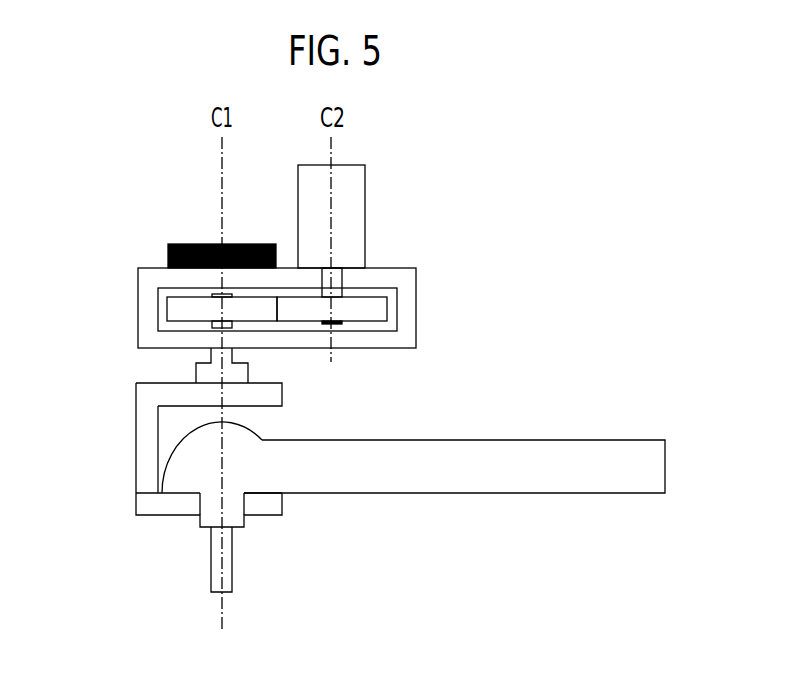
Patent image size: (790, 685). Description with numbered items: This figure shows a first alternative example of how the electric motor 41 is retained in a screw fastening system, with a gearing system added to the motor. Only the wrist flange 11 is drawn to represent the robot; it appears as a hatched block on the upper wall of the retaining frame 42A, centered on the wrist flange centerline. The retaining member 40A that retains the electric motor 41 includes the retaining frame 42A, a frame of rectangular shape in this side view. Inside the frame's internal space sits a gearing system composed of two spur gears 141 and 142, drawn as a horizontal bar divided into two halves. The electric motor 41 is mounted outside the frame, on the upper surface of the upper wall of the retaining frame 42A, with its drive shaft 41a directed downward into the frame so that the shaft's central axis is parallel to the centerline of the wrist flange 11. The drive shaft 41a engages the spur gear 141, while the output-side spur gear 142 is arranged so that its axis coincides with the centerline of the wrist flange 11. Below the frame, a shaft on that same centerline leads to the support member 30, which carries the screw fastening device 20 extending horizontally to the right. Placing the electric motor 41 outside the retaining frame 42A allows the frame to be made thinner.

The wrist flange 11 is at (168, 262).
The screw fastening device 20 is at (615, 430).
The support member 30 is at (126, 432).
The retaining member 40A is at (446, 229).
The electric motor 41 is at (365, 223).
The drive shaft 41a is at (342, 278).
The retaining frame 42A is at (416, 303).
The spur gear 141 is at (370, 322).
The spur gear 142 is at (167, 306).